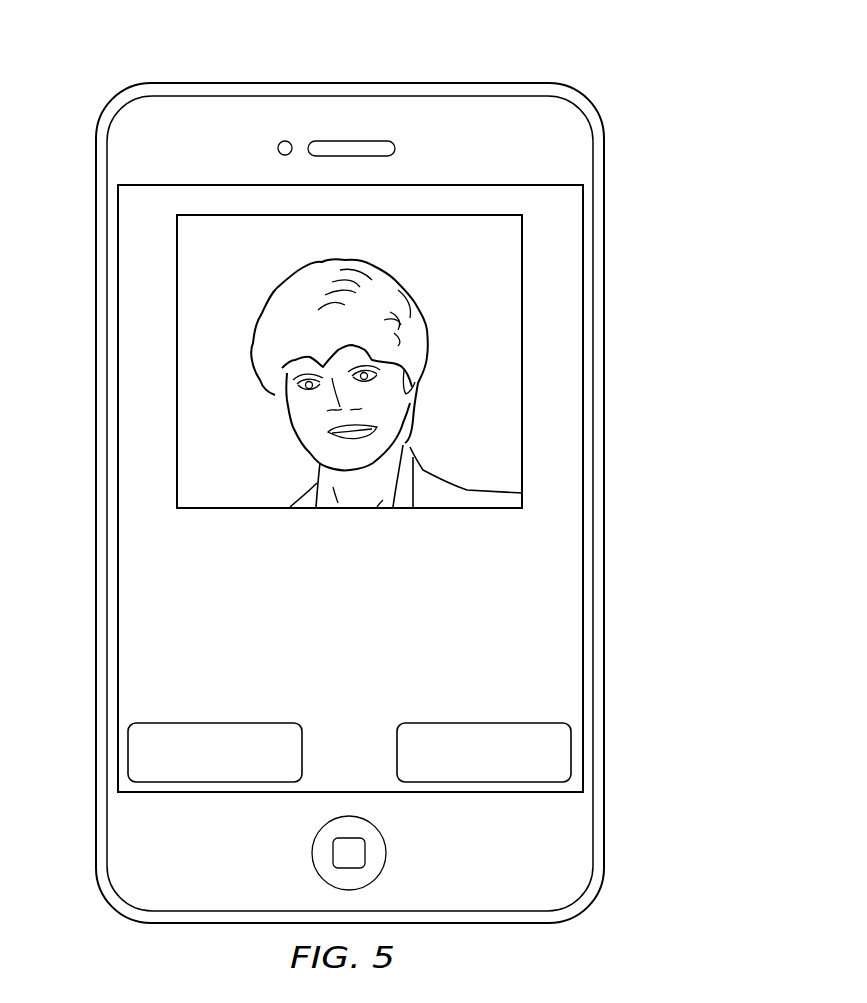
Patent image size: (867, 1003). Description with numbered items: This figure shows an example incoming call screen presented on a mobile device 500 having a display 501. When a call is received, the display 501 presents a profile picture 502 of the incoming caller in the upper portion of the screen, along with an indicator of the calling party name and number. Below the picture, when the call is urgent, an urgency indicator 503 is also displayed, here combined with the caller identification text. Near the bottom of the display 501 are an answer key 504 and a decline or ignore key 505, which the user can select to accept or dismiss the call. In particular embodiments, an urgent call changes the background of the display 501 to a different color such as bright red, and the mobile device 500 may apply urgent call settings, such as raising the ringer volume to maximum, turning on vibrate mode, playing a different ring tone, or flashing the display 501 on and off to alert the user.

The mobile device 500 is at (432, 64).
The display 501 is at (133, 412).
The profile picture 502 is at (232, 500).
The urgency indicator 503 is at (362, 575).
The answer key 504 is at (137, 752).
The decline or ignore key 505 is at (560, 753).